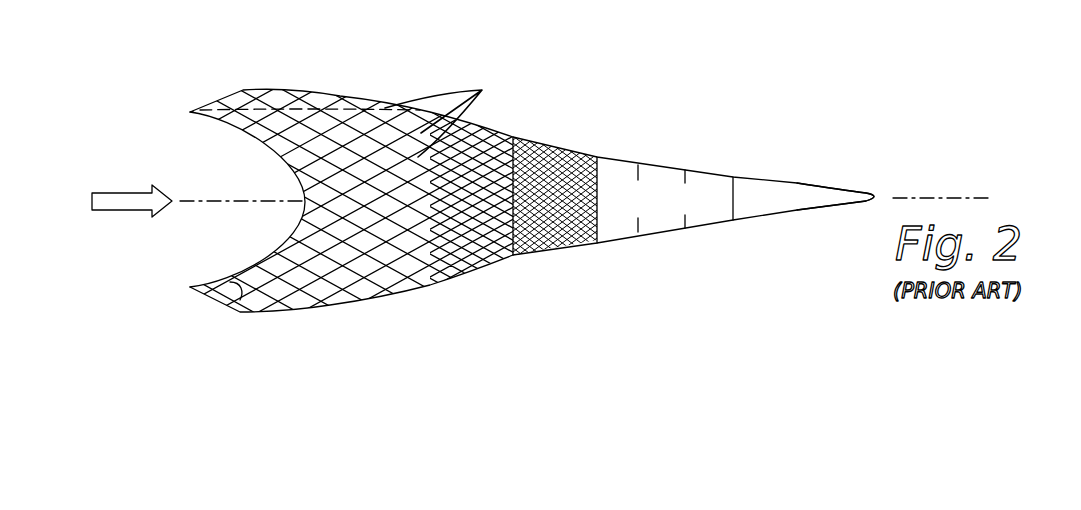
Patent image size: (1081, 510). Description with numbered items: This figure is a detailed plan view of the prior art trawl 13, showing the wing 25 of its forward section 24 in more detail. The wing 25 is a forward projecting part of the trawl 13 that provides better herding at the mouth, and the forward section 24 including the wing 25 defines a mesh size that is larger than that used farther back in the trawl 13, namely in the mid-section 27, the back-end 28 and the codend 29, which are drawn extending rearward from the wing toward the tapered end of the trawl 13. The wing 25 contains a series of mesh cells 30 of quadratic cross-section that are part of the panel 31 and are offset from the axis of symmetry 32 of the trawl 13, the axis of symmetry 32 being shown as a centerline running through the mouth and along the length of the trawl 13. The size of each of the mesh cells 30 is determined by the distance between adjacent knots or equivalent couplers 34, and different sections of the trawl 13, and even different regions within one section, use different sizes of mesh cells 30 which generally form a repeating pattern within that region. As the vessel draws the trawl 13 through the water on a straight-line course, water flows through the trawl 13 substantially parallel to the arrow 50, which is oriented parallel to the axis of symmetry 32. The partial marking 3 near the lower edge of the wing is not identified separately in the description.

The mesh strand (partial numeral) 3 is at (268, 295).
The trawl 13 is at (700, 90).
The forward section 24 is at (513, 138).
The wing 25 is at (236, 84).
The mid-section 27 is at (553, 238).
The back-end 28 is at (663, 164).
The codend 29 is at (790, 183).
The mesh cells 30 is at (345, 88).
The panel 31 is at (410, 106).
The axis of symmetry 32 is at (253, 198).
The knots or equivalent couplers 34 is at (449, 112).
The arrow 50 is at (115, 190).